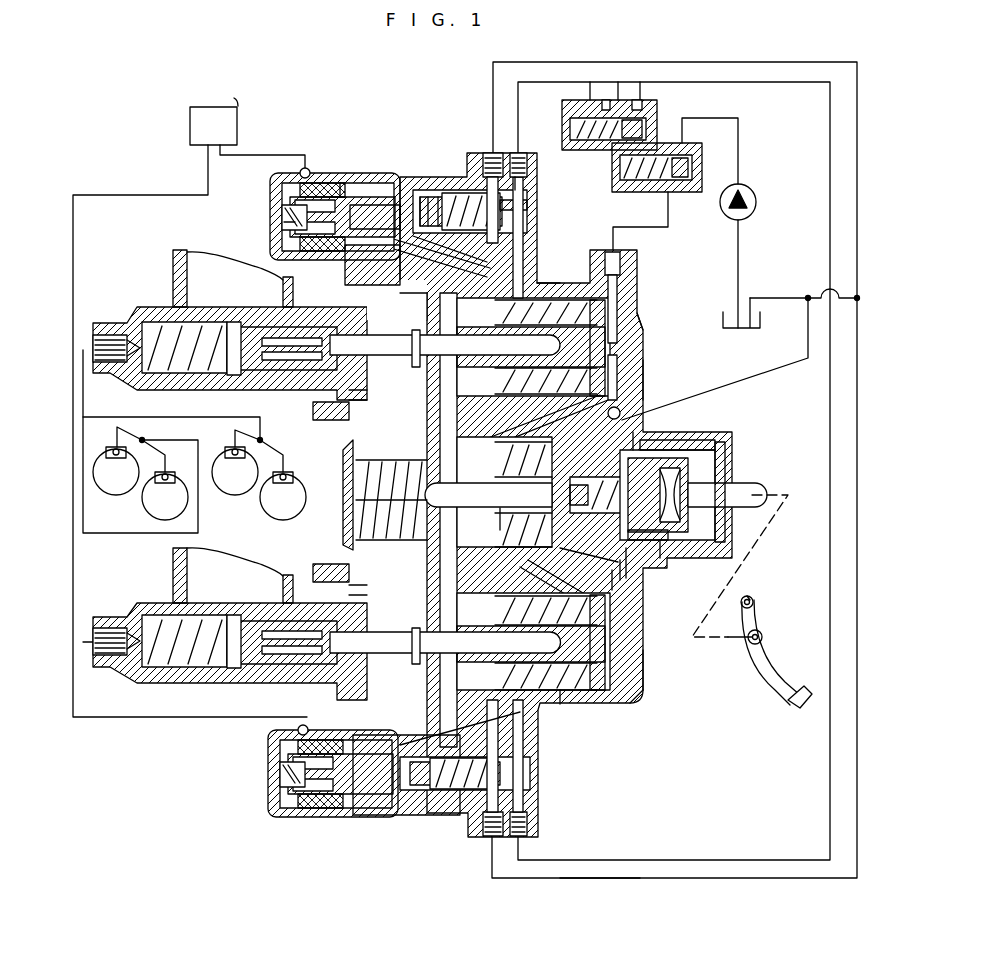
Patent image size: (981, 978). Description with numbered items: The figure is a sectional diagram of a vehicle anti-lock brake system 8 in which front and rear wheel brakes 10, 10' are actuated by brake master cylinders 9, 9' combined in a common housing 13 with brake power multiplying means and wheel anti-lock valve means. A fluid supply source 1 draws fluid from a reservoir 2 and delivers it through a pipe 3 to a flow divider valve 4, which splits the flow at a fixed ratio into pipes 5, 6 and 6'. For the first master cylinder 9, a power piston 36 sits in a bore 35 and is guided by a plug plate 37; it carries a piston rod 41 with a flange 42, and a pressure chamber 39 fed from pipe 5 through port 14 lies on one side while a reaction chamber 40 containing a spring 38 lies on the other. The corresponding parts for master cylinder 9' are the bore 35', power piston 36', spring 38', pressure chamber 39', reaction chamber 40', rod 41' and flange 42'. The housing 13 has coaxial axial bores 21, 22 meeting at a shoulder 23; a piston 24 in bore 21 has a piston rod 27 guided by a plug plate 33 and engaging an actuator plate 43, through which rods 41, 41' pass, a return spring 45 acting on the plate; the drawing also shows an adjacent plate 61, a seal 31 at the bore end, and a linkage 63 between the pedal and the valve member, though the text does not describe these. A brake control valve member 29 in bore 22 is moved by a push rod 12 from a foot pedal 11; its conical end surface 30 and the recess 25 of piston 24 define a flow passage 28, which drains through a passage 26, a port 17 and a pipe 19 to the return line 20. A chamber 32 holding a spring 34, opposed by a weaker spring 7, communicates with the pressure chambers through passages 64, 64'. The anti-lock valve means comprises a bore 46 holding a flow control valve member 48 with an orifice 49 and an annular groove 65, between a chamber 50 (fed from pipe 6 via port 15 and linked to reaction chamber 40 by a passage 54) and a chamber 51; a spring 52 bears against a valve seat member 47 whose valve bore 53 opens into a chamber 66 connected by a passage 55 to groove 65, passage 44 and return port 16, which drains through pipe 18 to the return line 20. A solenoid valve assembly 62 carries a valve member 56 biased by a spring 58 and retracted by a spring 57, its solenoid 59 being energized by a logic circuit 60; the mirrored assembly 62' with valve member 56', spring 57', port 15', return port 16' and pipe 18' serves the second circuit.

The fluid supply source 1 is at (751, 186).
The reservoir 2 is at (720, 322).
The pipe 3 is at (739, 160).
The flow divider valve 4 is at (656, 108).
The pipe 5 is at (668, 196).
The pipe 6 is at (674, 447).
The pipe 6' is at (615, 67).
The spring 7 is at (726, 468).
The vehicle anti-lock brake system 8 is at (643, 369).
The brake master cylinder 9 is at (230, 325).
The brake master cylinder 9' is at (230, 626).
The front wheel brake 10 is at (194, 529).
The rear wheel brake 10' is at (140, 441).
The foot pedal 11 is at (770, 660).
The push rod 12 is at (750, 486).
The housing 13 is at (635, 354).
The port 14 is at (620, 264).
The port 15 is at (538, 165).
The port 15' is at (543, 768).
The return port 16 is at (485, 181).
The return port 16' is at (467, 772).
The port 17 is at (620, 412).
The pipe 18 is at (674, 456).
The pipe 18' is at (600, 896).
The pipe 19 is at (796, 360).
The return line 20 is at (792, 296).
The axial bore 21 is at (565, 554).
The axial bore 22 is at (720, 543).
The shoulder 23 is at (634, 578).
The piston 24 is at (624, 584).
The recess 25 is at (628, 578).
The passage 26 is at (553, 480).
The piston rod 27 is at (432, 543).
The flow passage 28 is at (668, 540).
The brake control valve member 29 is at (723, 452).
The conical end surface 30 is at (665, 451).
The seal 31 is at (636, 452).
The chamber 32 is at (488, 492).
The plug plate 33 is at (454, 544).
The spring 34 is at (509, 506).
The bore 35 is at (568, 258).
The bore 35' is at (579, 708).
The power piston 36 is at (650, 325).
The power piston 36' is at (635, 713).
The plug plate 37 is at (468, 385).
The spring 38 is at (546, 396).
The spring 38' is at (531, 688).
The pressure chamber 39 is at (637, 309).
The pressure chamber 39' is at (665, 670).
The reaction chamber 40 is at (533, 326).
The reaction chamber 40' is at (533, 675).
The piston rod 41 is at (445, 361).
The piston rod 41' is at (445, 656).
The flange 42 is at (409, 363).
The flange 42' is at (414, 662).
The actuator plate 43 is at (424, 490).
The passage 44 is at (470, 169).
The return spring 45 is at (392, 465).
The bore 46 is at (428, 198).
The valve seat member 47 is at (422, 198).
The flow control valve member 48 is at (467, 196).
The orifice 49 is at (522, 200).
The chamber 50 is at (528, 228).
The chamber 51 is at (438, 195).
The spring 52 is at (427, 304).
The valve bore 53 is at (405, 299).
The passage 54 is at (532, 250).
The passage 55 is at (474, 224).
The valve member 56 is at (316, 165).
The valve member 56' is at (393, 793).
The spring 57 is at (355, 249).
The spring 57' is at (460, 800).
The spring 58 is at (280, 222).
The solenoid 59 is at (340, 164).
The logic circuit 60 is at (190, 132).
The plate 61 is at (342, 476).
The solenoid valve assembly 62 is at (311, 214).
The solenoid valve assembly 62' is at (321, 788).
The pedal linkage 63 is at (746, 544).
The passage 64 is at (539, 423).
The passage 64' is at (549, 587).
The annular groove 65 is at (518, 181).
The chamber 66 is at (413, 204).